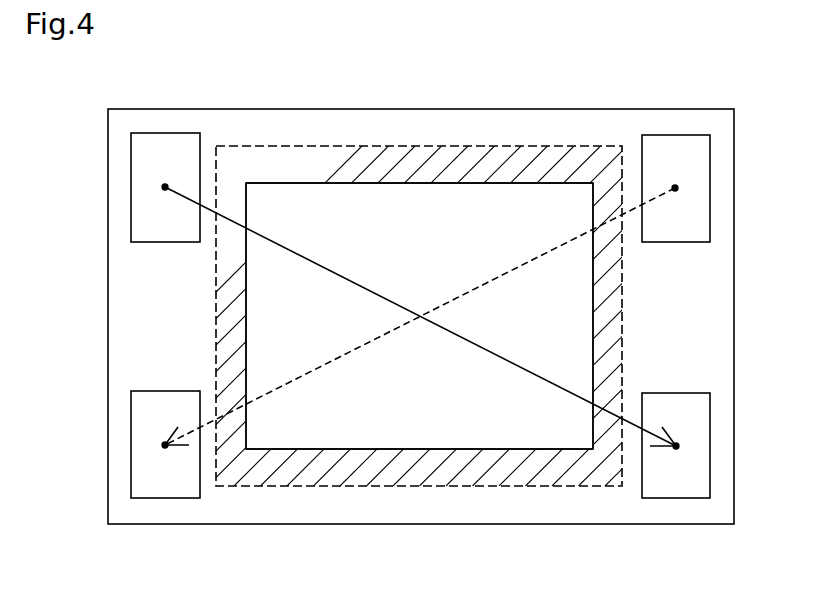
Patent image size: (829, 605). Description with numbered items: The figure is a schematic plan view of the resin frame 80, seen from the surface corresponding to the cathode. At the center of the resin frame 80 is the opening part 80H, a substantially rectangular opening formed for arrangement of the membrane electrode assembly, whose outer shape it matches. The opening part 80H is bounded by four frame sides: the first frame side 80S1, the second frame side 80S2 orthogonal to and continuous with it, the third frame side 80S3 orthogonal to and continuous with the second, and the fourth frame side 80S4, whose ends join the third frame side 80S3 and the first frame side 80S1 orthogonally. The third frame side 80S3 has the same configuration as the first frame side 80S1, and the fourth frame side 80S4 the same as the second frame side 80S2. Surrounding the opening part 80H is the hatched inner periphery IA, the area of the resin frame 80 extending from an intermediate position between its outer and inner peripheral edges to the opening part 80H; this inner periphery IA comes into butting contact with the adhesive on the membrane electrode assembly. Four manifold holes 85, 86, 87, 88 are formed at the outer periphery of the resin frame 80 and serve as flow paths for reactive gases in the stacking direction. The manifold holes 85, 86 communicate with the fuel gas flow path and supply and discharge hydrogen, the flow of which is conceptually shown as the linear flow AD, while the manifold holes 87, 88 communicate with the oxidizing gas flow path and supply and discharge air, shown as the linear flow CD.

The resin frame 80 is at (667, 109).
The manifold hole 85 is at (710, 188).
The manifold hole 86 is at (131, 443).
The manifold hole 87 is at (131, 186).
The manifold hole 88 is at (710, 445).
The opening part 80H is at (353, 449).
The first frame side 80S1 is at (246, 313).
The second frame side 80S2 is at (418, 449).
The third frame side 80S3 is at (593, 318).
The fourth frame side 80S4 is at (418, 183).
The inner periphery IA is at (371, 177).
The flow of air CD is at (360, 286).
The flow of hydrogen gas AD is at (480, 285).